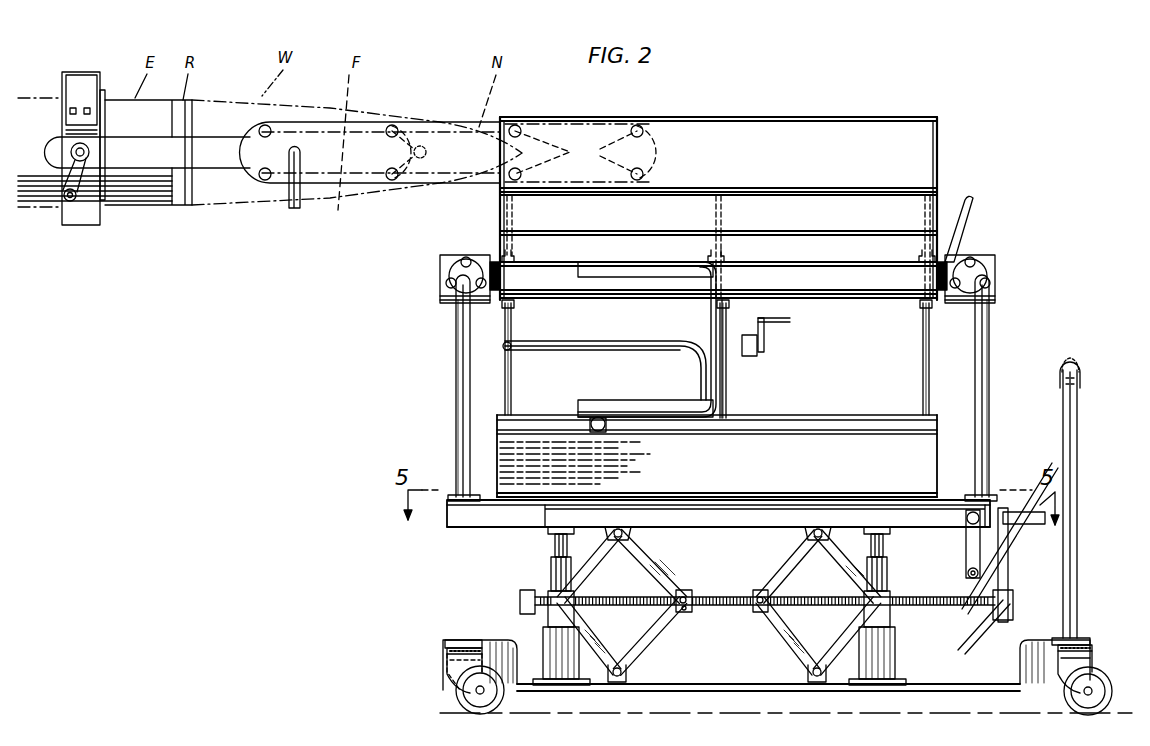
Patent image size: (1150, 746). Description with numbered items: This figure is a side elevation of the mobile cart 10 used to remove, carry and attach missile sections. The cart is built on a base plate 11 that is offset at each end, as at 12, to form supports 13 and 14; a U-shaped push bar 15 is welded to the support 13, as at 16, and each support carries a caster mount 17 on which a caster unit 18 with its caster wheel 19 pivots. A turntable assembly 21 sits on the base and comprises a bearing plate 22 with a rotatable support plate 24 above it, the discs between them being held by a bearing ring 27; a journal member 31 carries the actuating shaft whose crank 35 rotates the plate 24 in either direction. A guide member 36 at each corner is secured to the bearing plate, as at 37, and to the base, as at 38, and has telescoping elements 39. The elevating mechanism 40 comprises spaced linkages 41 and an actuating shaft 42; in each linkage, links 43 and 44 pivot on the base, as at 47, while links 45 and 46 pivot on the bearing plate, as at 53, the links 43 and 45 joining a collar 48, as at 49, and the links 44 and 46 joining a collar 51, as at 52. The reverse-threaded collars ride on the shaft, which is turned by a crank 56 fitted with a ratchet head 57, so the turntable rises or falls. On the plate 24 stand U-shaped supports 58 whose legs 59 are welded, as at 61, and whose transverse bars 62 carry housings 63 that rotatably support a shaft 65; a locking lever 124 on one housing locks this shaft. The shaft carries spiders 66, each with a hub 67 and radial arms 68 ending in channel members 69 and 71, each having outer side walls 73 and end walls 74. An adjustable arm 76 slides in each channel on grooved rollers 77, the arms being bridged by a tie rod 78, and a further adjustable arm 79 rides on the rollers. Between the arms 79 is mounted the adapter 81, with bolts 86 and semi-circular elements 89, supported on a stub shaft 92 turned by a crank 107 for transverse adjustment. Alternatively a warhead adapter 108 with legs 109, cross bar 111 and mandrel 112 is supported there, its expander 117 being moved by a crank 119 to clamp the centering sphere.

The mobile cart 10 is at (945, 110).
The base plate 11 is at (735, 692).
The offset 12 is at (518, 690).
The support 13 is at (1090, 645).
The support 14 is at (445, 643).
The push bar 15 is at (1077, 366).
The weld 16 is at (1086, 640).
The caster mount 17 is at (447, 651).
The caster unit 18 is at (455, 668).
The caster wheel 19 is at (457, 696).
The turntable assembly 21 is at (470, 507).
The bearing plate 22 is at (530, 525).
The support plate 24 is at (495, 505).
The bearing ring 27 is at (640, 515).
The journal member 31 is at (968, 530).
The crank 35 is at (968, 575).
The guide member 36 is at (550, 570).
The securing point 37 is at (552, 531).
The securing point 38 is at (906, 681).
The telescoping elements 39 is at (550, 620).
The elevating mechanism 40 is at (690, 690).
The linkage 41 is at (650, 562).
The actuating shaft 42 is at (975, 618).
The link 43 is at (595, 644).
The link 44 is at (642, 644).
The link 45 is at (590, 565).
The link 46 is at (650, 563).
The pivot connection 47 is at (622, 672).
The collar 48 is at (760, 613).
The pivot connection 49 is at (757, 604).
The collar 51 is at (682, 612).
The pivot connection 52 is at (686, 595).
The pivot connection 53 is at (618, 528).
The crank 56 is at (1012, 537).
The ratchet head 57 is at (1013, 615).
The U-shaped support 58 is at (452, 362).
The terminal legs 59 is at (455, 408).
The weld 61 is at (445, 500).
The transverse bar 62 is at (456, 266).
The bearing housing 63 is at (443, 275).
The shaft 65 is at (893, 300).
The spider 66 is at (515, 373).
The hub 67 is at (516, 308).
The arms 68 is at (512, 400).
The channel member 69 is at (797, 115).
The channel member 71 is at (782, 219).
The outer side walls 73 is at (742, 164).
The end walls 74 is at (736, 117).
The adjustable arm 76 is at (374, 118).
The grooved rollers 77 is at (245, 152).
The tie rod 78 is at (300, 210).
The adjustable arm 79 is at (149, 159).
The adapter 81 is at (82, 73).
The bolts 86 is at (87, 108).
The semi-circular elements 89 is at (104, 92).
The stub shaft 92 is at (90, 152).
The crank 107 is at (66, 188).
The warhead adapter 108 is at (710, 322).
The legs 109 is at (636, 278).
The cross bar 111 is at (730, 382).
The mandrel 112 is at (545, 340).
The expander 117 is at (504, 343).
The crank 119 is at (780, 320).
The locking lever 124 is at (971, 209).